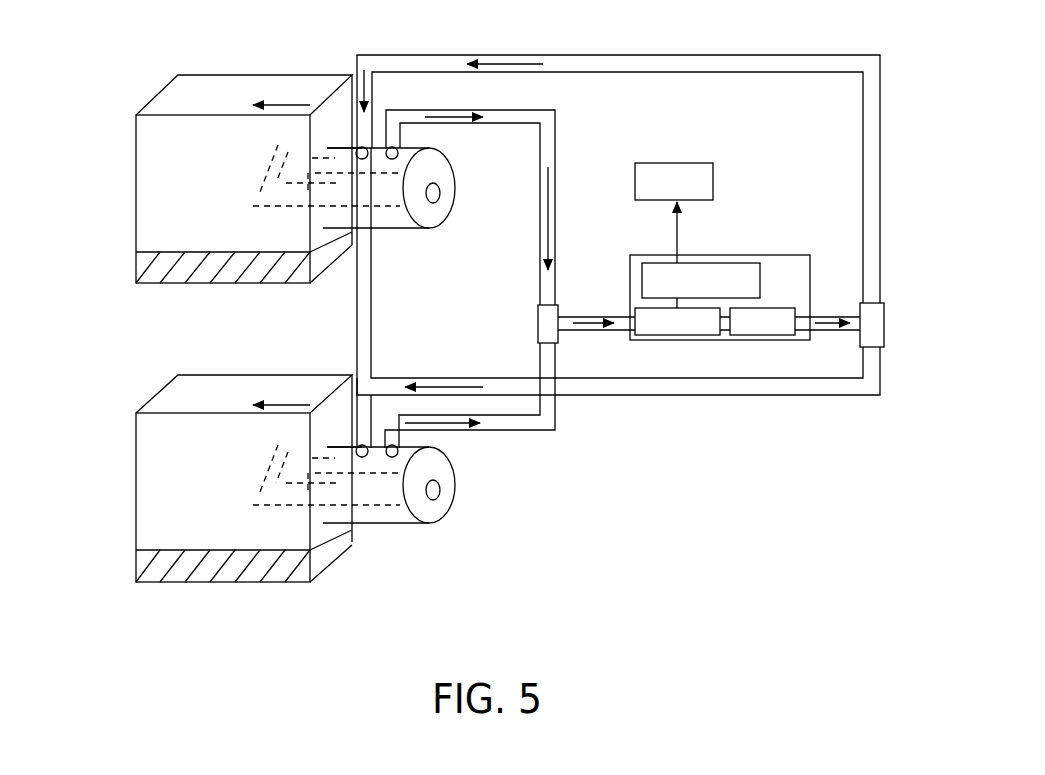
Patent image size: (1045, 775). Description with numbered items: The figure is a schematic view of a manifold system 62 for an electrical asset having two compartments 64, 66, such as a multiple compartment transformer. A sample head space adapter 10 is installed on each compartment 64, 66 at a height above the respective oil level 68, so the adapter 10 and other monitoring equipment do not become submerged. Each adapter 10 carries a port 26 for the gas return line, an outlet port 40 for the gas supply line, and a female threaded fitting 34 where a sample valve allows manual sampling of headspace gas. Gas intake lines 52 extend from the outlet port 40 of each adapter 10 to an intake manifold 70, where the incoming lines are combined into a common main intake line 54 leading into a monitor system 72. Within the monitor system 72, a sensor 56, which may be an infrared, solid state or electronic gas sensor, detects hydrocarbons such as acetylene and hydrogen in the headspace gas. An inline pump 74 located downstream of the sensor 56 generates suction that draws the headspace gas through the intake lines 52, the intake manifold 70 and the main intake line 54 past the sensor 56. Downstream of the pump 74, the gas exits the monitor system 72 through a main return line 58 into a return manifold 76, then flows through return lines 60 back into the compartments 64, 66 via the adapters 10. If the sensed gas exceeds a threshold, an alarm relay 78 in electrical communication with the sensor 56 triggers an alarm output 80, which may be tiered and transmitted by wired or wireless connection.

The sample head space adapter 10 is at (398, 232).
The port 26 is at (358, 155).
The female threaded fitting 34 is at (438, 195).
The outlet port 40 is at (397, 150).
The gas intake lines 52 is at (556, 240).
The common main intake line 54 is at (578, 332).
The sensor 56 is at (655, 336).
The main return line 58 is at (822, 333).
The return lines 60 is at (880, 248).
The manifold system 62 is at (85, 87).
The first compartment 64 is at (136, 194).
The second compartment 66 is at (136, 462).
The oil level 68 is at (128, 258).
The intake manifold 70 is at (538, 322).
The monitor system 72 is at (810, 285).
The inline pump 74 is at (750, 337).
The return manifold 76 is at (884, 318).
The alarm relay 78 is at (760, 276).
The alarm output 80 is at (713, 173).